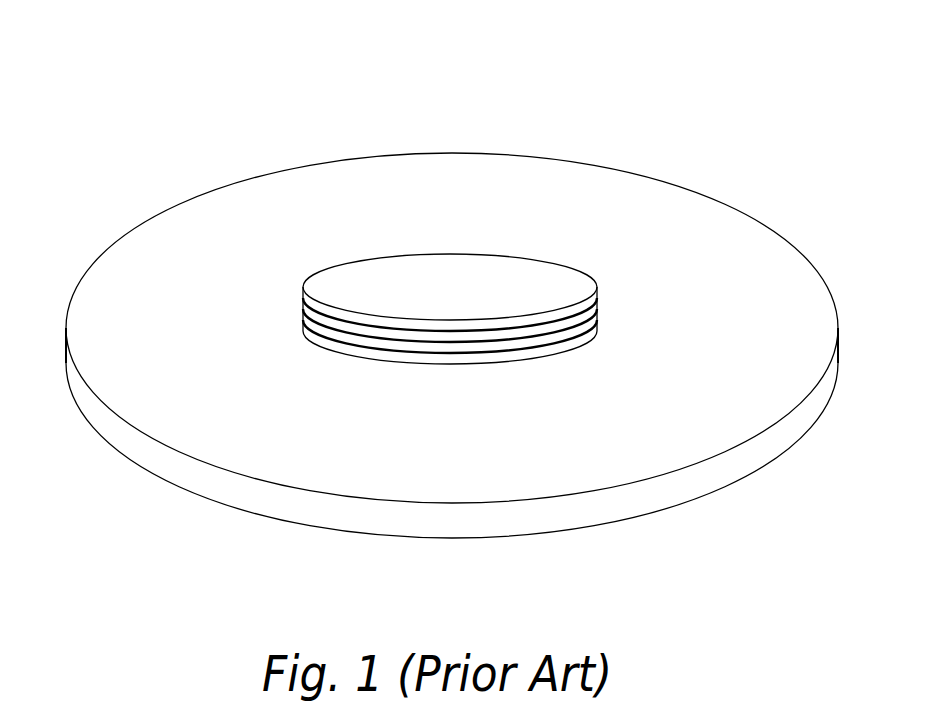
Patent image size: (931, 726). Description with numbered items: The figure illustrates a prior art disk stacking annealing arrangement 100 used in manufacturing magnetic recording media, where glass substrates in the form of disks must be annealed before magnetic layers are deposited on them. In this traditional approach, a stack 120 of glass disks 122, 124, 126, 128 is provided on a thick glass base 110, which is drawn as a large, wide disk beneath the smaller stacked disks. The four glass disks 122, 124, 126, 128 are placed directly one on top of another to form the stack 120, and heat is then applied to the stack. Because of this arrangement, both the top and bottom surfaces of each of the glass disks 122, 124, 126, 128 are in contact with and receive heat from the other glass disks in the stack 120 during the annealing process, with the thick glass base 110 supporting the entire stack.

The prior art fiber optic assembly 100 is at (140, 106).
The thick glass base 110 is at (132, 252).
The stack 120 is at (603, 282).
The glass disk 122 is at (303, 327).
The glass disk 124 is at (303, 314).
The glass disk 126 is at (303, 300).
The glass disk 128 is at (303, 287).